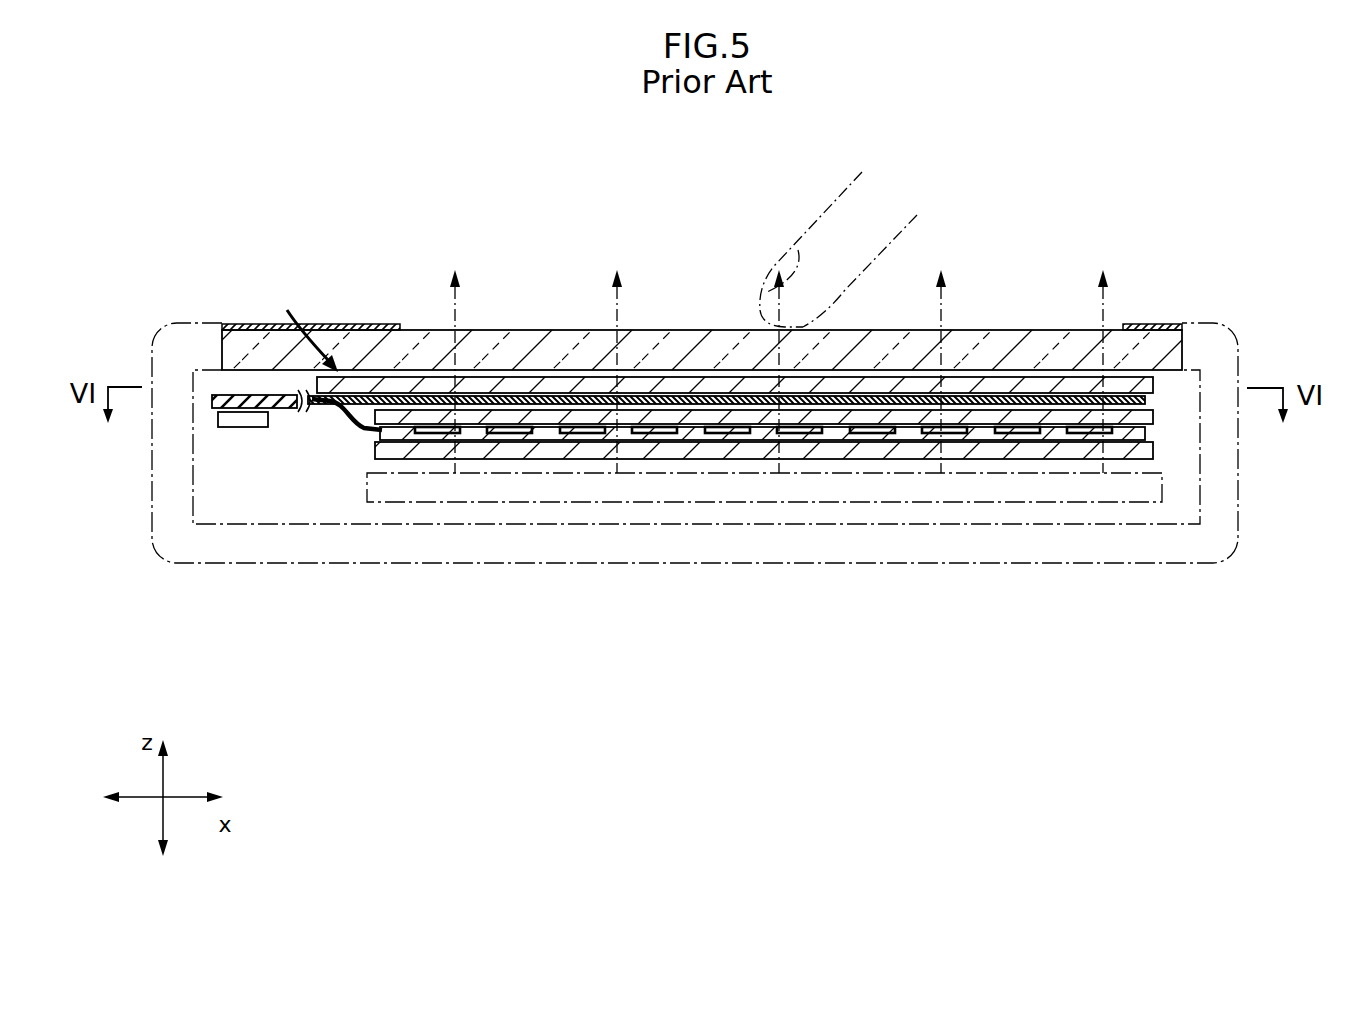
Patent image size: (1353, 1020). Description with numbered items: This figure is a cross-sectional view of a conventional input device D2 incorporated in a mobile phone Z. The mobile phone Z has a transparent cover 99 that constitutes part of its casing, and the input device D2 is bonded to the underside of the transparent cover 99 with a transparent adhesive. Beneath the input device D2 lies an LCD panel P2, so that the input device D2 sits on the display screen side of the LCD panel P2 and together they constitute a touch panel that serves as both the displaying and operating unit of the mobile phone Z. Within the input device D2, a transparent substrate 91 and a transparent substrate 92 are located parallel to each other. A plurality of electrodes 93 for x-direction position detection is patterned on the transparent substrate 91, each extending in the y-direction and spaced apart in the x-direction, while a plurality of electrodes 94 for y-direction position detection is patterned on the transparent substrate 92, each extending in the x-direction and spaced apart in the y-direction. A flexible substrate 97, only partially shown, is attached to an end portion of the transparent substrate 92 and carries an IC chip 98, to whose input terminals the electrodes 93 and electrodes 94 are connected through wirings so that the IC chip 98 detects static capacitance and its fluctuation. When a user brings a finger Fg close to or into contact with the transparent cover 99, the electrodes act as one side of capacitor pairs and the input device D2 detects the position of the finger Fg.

The transparent cover 99 is at (565, 346).
The transparent substrate 92 is at (1142, 388).
The transparent substrate 91 is at (1142, 402).
The electrodes for y-direction position detection 94 is at (1142, 420).
The electrodes for x-direction position detection 93 is at (1147, 432).
The flexible substrate 97 is at (242, 396).
The IC chip 98 is at (253, 421).
The LCD panel P2 is at (728, 502).
The mobile phone Z is at (212, 580).
The finger Fg is at (812, 230).
The input device D2 is at (304, 322).